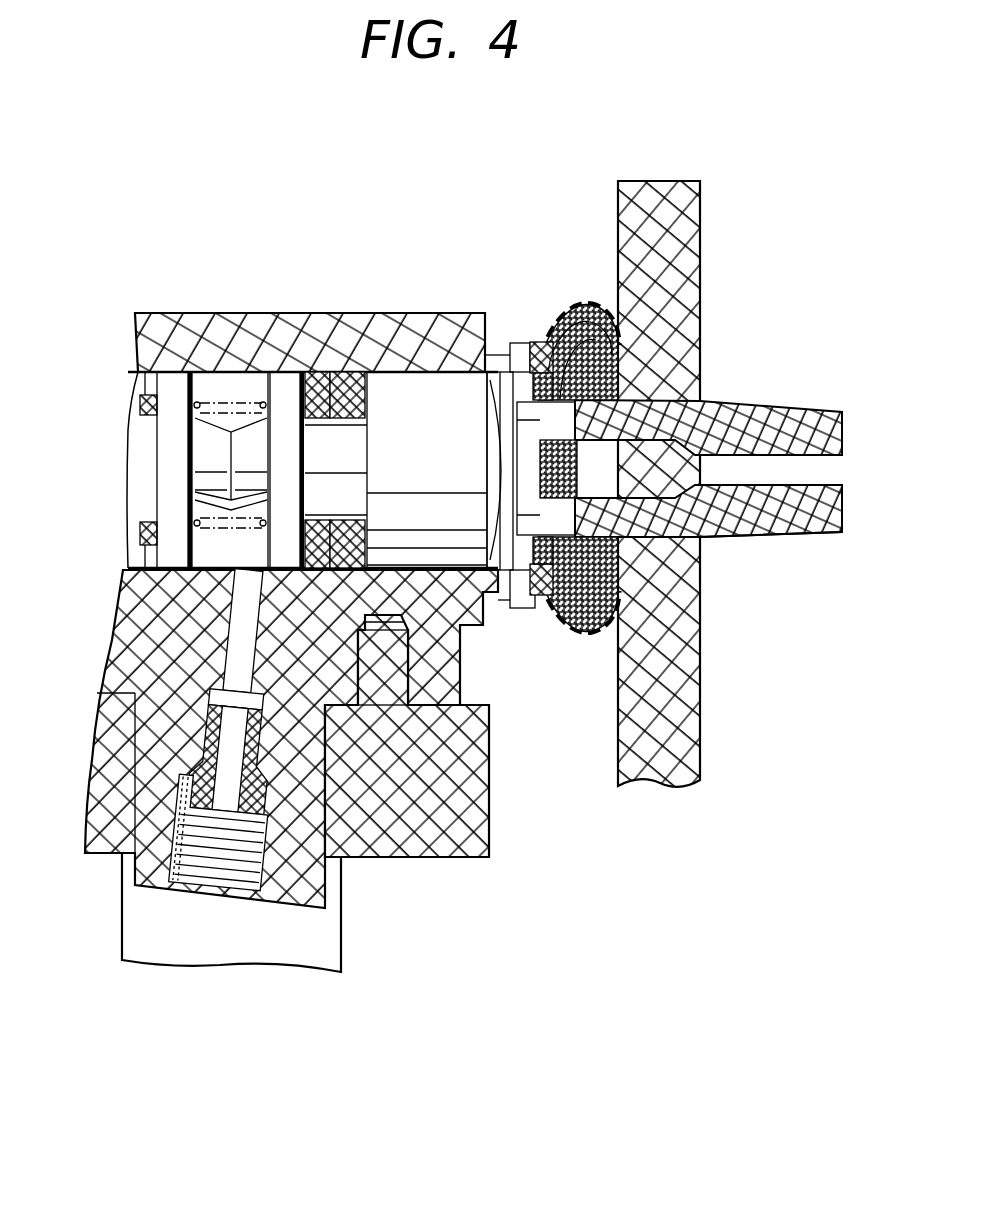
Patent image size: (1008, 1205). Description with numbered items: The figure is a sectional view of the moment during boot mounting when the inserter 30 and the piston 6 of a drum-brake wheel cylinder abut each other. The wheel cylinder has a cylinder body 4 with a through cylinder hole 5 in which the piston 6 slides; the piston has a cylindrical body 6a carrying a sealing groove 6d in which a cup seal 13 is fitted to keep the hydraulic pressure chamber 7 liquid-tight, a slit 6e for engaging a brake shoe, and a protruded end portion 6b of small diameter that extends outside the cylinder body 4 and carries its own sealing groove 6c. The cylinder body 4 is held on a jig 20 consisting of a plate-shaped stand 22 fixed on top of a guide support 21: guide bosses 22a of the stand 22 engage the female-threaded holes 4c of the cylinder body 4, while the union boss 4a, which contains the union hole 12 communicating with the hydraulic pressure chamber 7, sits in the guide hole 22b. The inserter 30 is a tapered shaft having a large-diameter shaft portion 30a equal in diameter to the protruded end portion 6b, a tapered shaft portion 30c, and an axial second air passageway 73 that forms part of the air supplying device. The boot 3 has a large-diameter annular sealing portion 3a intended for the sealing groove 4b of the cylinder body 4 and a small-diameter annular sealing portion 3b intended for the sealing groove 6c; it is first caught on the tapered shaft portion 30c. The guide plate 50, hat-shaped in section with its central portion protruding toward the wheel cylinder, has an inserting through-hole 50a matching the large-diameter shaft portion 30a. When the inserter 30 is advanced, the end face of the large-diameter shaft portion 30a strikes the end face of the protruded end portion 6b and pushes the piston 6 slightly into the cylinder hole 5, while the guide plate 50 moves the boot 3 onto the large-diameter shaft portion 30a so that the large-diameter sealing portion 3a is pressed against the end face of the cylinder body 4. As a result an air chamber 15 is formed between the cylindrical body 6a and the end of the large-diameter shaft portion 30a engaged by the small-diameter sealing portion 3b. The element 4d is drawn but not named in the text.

The boot 3 is at (647, 497).
The large-diameter annular sealing portion 3a is at (547, 345).
The small-diameter annular sealing portion 3b is at (580, 390).
The cylinder body 4 is at (258, 332).
The union boss 4a is at (293, 885).
The sealing groove 4b is at (513, 343).
The female-threaded holes 4c is at (390, 692).
The housing flange piece 4d is at (522, 598).
The cylinder hole 5 is at (277, 385).
The piston 6 is at (461, 355).
The cylindrical body 6a is at (174, 380).
The protruded end portion 6b is at (562, 355).
The sealing groove 6c is at (503, 595).
The sealing groove 6d is at (142, 405).
The slit 6e is at (545, 463).
The hydraulic pressure chamber 7 is at (225, 385).
The union hole 12 is at (237, 875).
The cup seal 13 is at (343, 395).
The air chamber 15 is at (592, 345).
The jig 20 is at (92, 878).
The guide support 21 is at (162, 937).
The plate-shaped stand 22 is at (447, 848).
The guide boss 22a is at (383, 655).
The guide hole 22b is at (147, 762).
The inserter 30 is at (744, 488).
The large-diameter shaft portion 30a is at (667, 530).
The tapered shaft portion 30c is at (815, 527).
The guide plate 50 is at (668, 228).
The inserting through-hole 50a is at (683, 520).
The second air passageway 73 is at (822, 470).